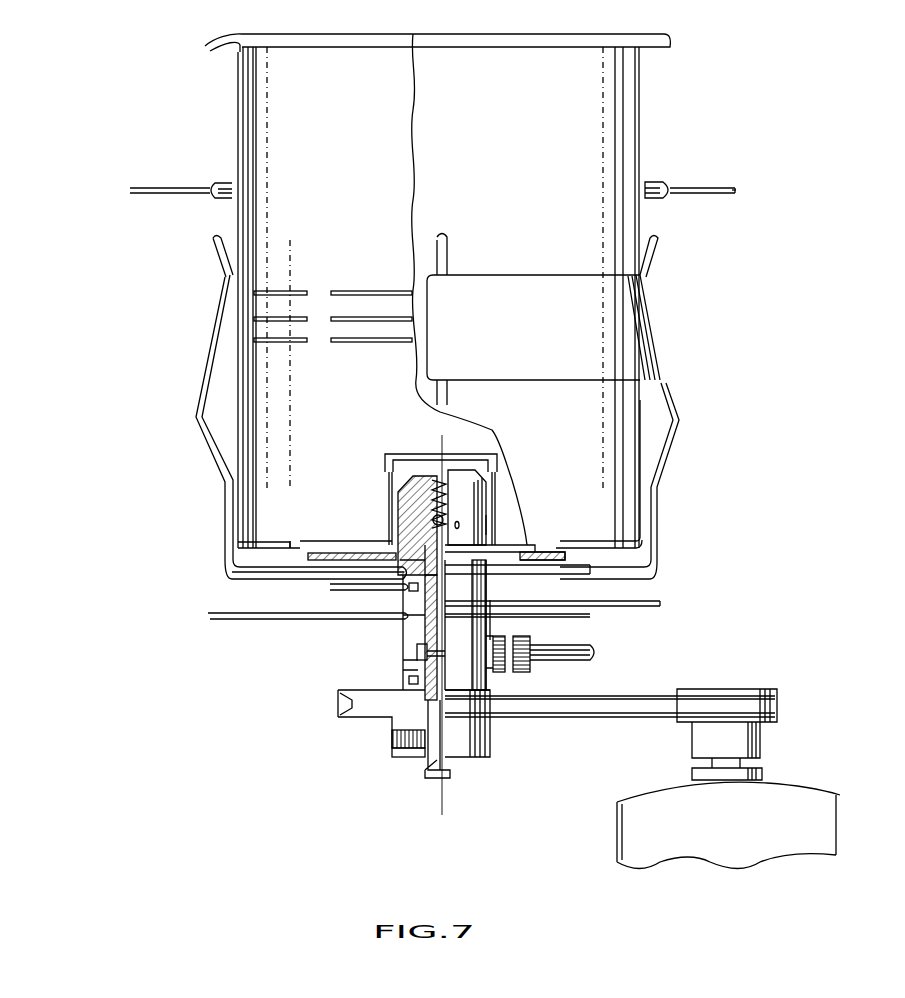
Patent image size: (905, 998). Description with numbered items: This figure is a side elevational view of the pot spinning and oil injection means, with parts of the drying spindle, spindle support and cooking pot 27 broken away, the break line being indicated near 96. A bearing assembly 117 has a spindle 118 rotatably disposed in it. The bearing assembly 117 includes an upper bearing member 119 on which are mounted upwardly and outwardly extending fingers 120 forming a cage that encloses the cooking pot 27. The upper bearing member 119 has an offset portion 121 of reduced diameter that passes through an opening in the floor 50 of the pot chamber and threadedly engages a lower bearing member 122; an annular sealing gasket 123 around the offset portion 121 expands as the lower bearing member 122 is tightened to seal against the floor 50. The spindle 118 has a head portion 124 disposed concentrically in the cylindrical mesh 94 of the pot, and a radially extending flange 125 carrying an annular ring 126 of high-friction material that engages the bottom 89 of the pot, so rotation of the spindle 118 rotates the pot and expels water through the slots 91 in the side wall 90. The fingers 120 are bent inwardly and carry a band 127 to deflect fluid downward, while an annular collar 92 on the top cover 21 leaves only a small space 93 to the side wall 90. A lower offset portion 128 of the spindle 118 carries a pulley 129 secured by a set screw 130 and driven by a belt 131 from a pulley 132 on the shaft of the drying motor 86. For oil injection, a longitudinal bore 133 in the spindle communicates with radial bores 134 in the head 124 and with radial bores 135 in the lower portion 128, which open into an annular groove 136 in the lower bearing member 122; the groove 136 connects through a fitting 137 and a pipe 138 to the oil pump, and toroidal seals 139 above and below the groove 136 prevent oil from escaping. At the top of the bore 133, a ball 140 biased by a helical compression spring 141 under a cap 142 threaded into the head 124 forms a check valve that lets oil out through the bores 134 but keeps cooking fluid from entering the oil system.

The top cover 21 is at (713, 186).
The cooking pot 27 is at (643, 92).
The floor 50 is at (655, 599).
The spinning or drying motor 86 is at (796, 784).
The bottom 89 is at (283, 546).
The side wall 90 is at (232, 199).
The slots 91 is at (360, 292).
The annular collar 92 is at (672, 184).
The small space 93 is at (646, 184).
The cylindrical mesh 94 is at (498, 490).
The break line 96 is at (486, 448).
The bearing assembly 117 is at (410, 632).
The spindle 118 is at (451, 778).
The upper bearing member 119 is at (490, 591).
The support arms or fingers 120 is at (657, 452).
The offset portion 121 is at (478, 634).
The lower bearing member 122 is at (540, 638).
The annular sealing gasket 123 is at (492, 622).
The head portion 124 is at (497, 512).
The flange 125 is at (300, 568).
The annular ring 126 is at (338, 550).
The band 127 is at (533, 275).
The offset portion 128 is at (430, 716).
The pulley 129 is at (362, 719).
The set screw 130 is at (400, 757).
The belt 131 is at (616, 695).
The pulley 132 is at (762, 689).
The longitudinally-extending bore 133 is at (345, 587).
The radially outwardly-extending bores 134 is at (496, 527).
The radially-extending bores 135 is at (417, 651).
The annular groove 136 is at (410, 665).
The fitting 137 is at (523, 674).
The pipe 138 is at (595, 645).
The toroidal seals 139 is at (409, 587).
The ball 140 is at (432, 520).
The helical compression spring 141 is at (392, 478).
The cap 142 is at (440, 476).